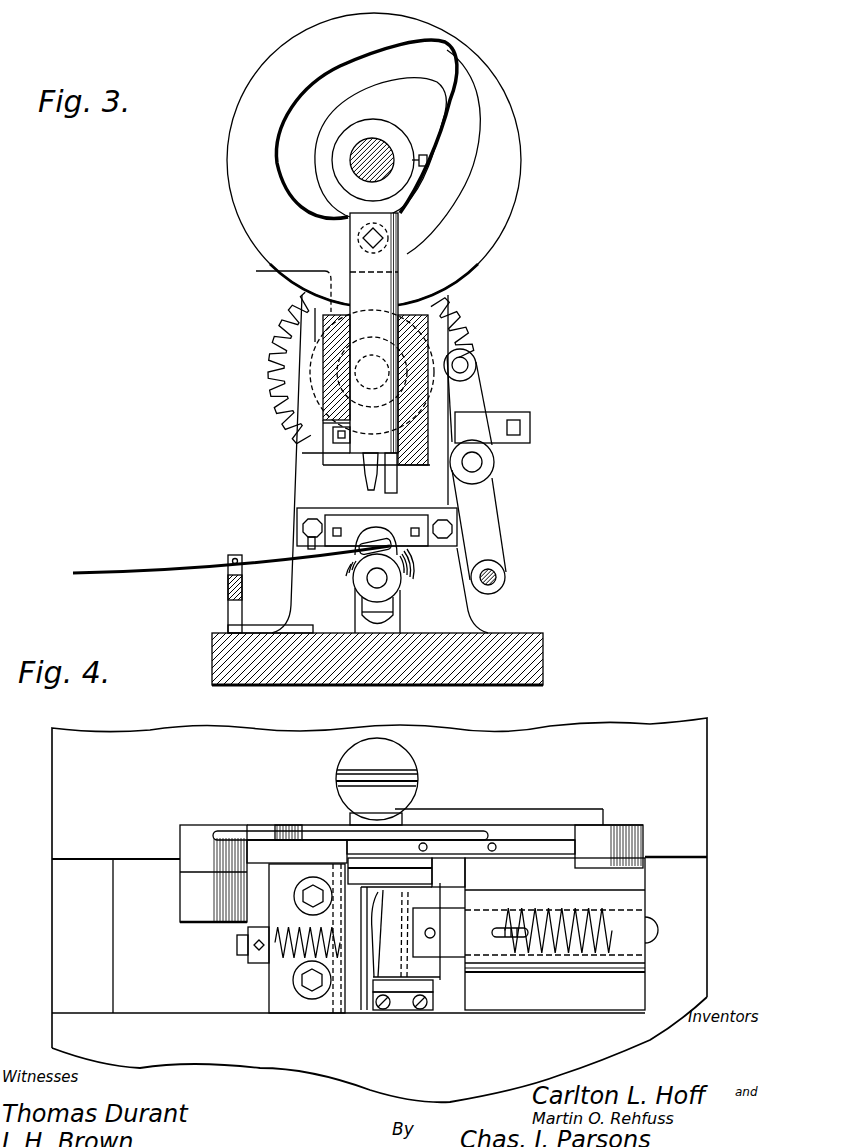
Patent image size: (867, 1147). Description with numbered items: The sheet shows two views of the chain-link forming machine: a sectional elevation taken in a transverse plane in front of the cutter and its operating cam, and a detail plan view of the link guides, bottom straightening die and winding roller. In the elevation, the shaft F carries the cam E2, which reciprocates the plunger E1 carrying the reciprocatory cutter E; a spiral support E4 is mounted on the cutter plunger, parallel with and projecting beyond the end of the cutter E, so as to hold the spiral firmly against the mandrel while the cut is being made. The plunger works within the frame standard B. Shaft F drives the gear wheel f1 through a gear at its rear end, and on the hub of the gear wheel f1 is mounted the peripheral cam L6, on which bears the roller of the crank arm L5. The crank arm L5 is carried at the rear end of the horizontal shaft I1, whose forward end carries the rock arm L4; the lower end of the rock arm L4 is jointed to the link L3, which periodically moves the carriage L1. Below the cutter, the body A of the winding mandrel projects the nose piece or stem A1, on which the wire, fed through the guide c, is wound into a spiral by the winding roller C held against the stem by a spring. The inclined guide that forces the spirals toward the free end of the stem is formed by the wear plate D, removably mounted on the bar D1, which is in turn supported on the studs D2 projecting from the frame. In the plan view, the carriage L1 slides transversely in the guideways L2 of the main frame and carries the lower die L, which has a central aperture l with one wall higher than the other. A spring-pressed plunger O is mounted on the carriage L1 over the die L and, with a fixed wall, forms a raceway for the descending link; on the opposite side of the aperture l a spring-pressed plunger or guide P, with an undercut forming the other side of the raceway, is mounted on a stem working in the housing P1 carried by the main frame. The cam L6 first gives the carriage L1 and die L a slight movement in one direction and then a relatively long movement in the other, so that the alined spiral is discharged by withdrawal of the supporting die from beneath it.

In FIG. 3, the cam E2 is at (465, 137).
In FIG. 3, the shaft F is at (388, 142).
In FIG. 3, the plunger E1 is at (372, 286).
In FIG. 3, the peripheral cam L6 is at (271, 287).
In FIG. 3, the gear wheel f1 is at (466, 328).
In FIG. 3, the frame standard B is at (300, 470).
In FIG. 3, the reciprocatory cutter E is at (315, 455).
In FIG. 3, the spiral support E4 is at (398, 480).
In FIG. 3, the crank arm L5 is at (475, 397).
In FIG. 3, the shaft I1 is at (484, 462).
In FIG. 3, the rock arm L4 is at (490, 520).
In FIG. 3, the wear plate D is at (357, 522).
In FIG. 3, the bar D1 is at (297, 514).
In FIG. 3, the studs D2 is at (303, 528).
In FIG. 3, the body of the mandrel A is at (405, 556).
In FIG. 3, the nose piece or stem A1 is at (400, 590).
In FIG. 3, the guide c is at (228, 558).
In FIG. 3, the winding roller C is at (346, 565).
In FIG. 4, the winding roller C is at (395, 783).
In FIG. 4, the guideways L2 is at (80, 855).
In FIG. 4, the link L3 is at (250, 825).
In FIG. 4, the lower die L is at (392, 907).
In FIG. 4, the housing P1 is at (628, 900).
In FIG. 4, the central recess or aperture l is at (463, 912).
In FIG. 4, the spring-pressed plunger or guide P is at (410, 963).
In FIG. 4, the carriage L1 is at (258, 938).
In FIG. 4, the spring-pressed plunger O is at (378, 1013).